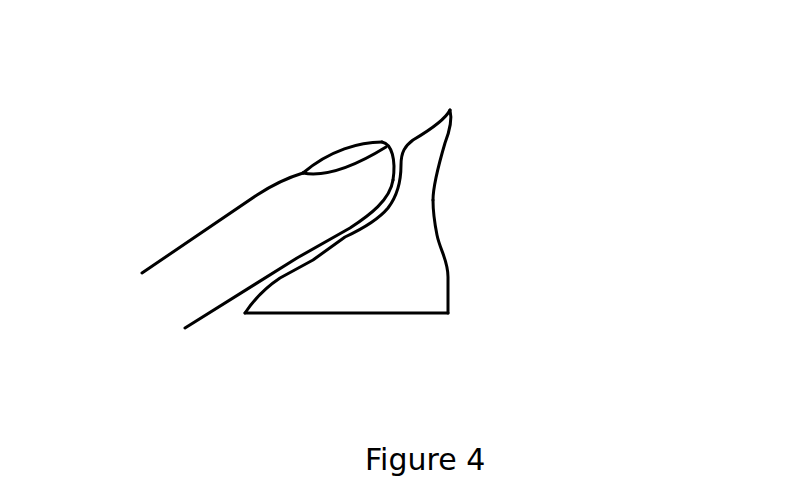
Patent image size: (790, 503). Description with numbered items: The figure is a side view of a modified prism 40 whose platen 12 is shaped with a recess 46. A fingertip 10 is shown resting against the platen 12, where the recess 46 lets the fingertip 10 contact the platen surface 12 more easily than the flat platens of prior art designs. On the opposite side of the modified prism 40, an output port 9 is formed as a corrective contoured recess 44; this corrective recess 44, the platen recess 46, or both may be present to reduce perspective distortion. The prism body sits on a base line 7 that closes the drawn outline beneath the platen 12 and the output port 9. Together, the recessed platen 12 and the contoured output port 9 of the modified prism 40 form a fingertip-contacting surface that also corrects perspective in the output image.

The finger 10 is at (236, 179).
The platen 12 is at (397, 155).
The modified prism 40 is at (425, 204).
The corrective contoured recess 44 is at (468, 163).
The output port 9 is at (435, 218).
The recess 46 is at (370, 235).
The base 7 is at (410, 315).